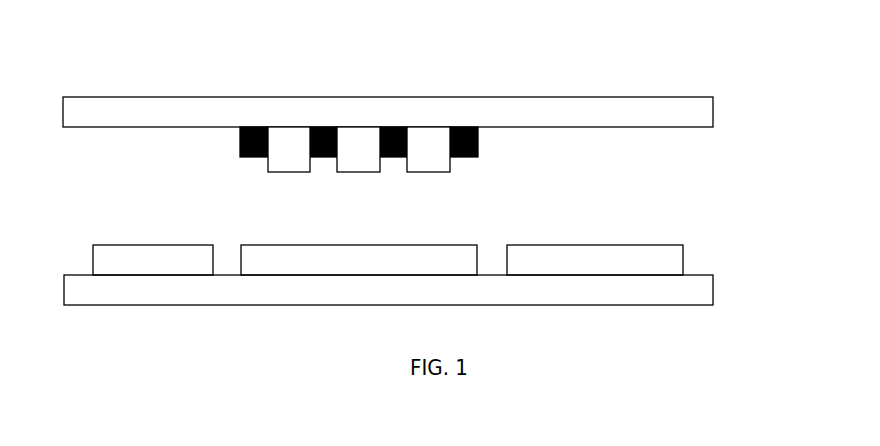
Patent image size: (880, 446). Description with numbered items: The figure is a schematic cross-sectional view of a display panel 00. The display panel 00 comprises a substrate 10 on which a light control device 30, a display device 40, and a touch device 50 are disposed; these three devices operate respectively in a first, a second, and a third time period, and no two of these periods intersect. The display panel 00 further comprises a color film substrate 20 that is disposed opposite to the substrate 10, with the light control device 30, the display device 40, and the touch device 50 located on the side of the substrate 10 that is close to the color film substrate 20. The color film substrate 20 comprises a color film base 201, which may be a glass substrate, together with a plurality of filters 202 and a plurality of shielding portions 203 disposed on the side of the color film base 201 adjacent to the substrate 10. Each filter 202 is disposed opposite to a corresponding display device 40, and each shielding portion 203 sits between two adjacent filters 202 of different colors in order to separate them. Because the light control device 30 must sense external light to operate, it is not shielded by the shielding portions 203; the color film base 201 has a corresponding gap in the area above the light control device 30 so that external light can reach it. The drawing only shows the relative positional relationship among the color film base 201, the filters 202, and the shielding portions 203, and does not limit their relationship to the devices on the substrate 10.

The display panel 00 is at (116, 59).
The substrate 10 is at (683, 290).
The color film substrate 20 is at (407, 53).
The color film base 201 is at (370, 112).
The filters 202 is at (285, 147).
The shielding portions 203 is at (238, 143).
The light control device 30 is at (653, 258).
The display device 40 is at (358, 260).
The touch device 50 is at (152, 260).